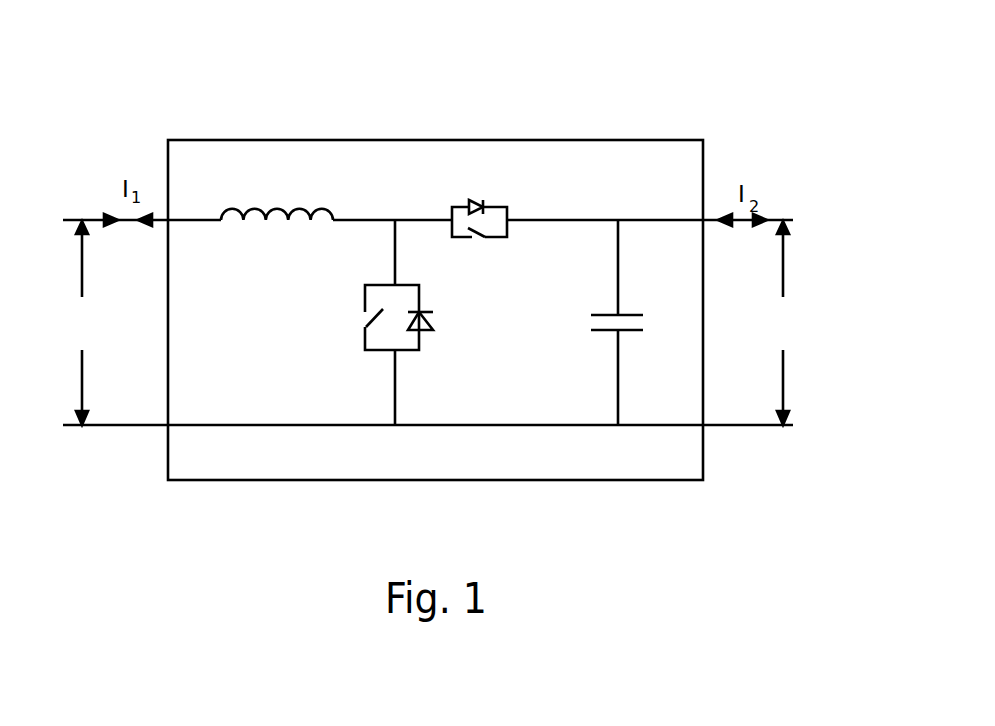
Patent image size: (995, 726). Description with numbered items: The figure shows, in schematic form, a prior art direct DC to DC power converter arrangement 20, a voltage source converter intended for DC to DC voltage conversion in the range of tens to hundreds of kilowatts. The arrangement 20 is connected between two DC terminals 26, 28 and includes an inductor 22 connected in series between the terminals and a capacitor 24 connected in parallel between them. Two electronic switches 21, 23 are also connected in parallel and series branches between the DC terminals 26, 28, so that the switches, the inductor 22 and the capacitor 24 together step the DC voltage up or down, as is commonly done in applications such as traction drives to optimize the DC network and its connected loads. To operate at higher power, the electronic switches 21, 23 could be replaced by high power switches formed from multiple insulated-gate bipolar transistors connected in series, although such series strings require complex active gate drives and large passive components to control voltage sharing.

The direct DC to DC power converter arrangement 20 is at (806, 145).
The electronic switch 21 is at (362, 315).
The inductor 22 is at (278, 205).
The electronic switch 23 is at (497, 204).
The capacitor 24 is at (627, 312).
The DC terminal 26 is at (68, 333).
The DC terminal 28 is at (803, 322).